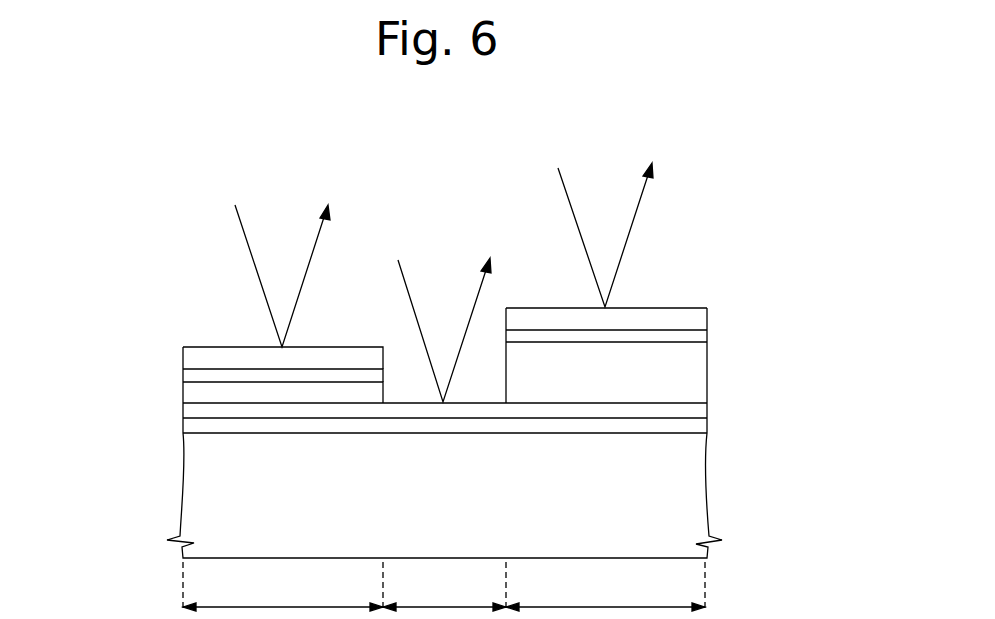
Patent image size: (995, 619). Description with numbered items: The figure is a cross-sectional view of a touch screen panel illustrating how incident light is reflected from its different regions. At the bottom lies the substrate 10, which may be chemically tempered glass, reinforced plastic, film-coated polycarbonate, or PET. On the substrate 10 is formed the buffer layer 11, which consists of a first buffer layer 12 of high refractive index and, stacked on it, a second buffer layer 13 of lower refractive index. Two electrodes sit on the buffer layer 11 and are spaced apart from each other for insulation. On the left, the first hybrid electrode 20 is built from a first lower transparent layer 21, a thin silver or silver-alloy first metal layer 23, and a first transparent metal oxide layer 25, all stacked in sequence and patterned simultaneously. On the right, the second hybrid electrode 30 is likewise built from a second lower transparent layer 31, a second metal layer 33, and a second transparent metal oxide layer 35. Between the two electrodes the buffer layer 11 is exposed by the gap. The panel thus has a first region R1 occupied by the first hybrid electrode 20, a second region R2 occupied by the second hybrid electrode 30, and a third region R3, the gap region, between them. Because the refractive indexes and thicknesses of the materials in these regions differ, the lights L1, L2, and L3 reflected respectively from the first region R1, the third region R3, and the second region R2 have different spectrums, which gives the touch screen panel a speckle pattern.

The substrate 10 is at (697, 486).
The buffer layer 11 is at (773, 397).
The first buffer layer 12 is at (697, 427).
The second buffer layer 13 is at (697, 405).
The first hybrid electrode 20 is at (112, 347).
The first lower transparent layer 21 is at (187, 395).
The first metal layer 23 is at (187, 375).
The first transparent metal oxide layer 25 is at (187, 352).
The second hybrid electrode 30 is at (773, 300).
The second lower transparent layer 31 is at (697, 371).
The second metal layer 33 is at (697, 336).
The second transparent metal oxide layer 35 is at (697, 313).
The light reflected from the first region L1 is at (276, 263).
The light reflected from the third region L2 is at (438, 319).
The light reflected from the second region L3 is at (600, 224).
The first region R1 is at (283, 596).
The second region R2 is at (605, 596).
The third region R3 is at (444, 596).